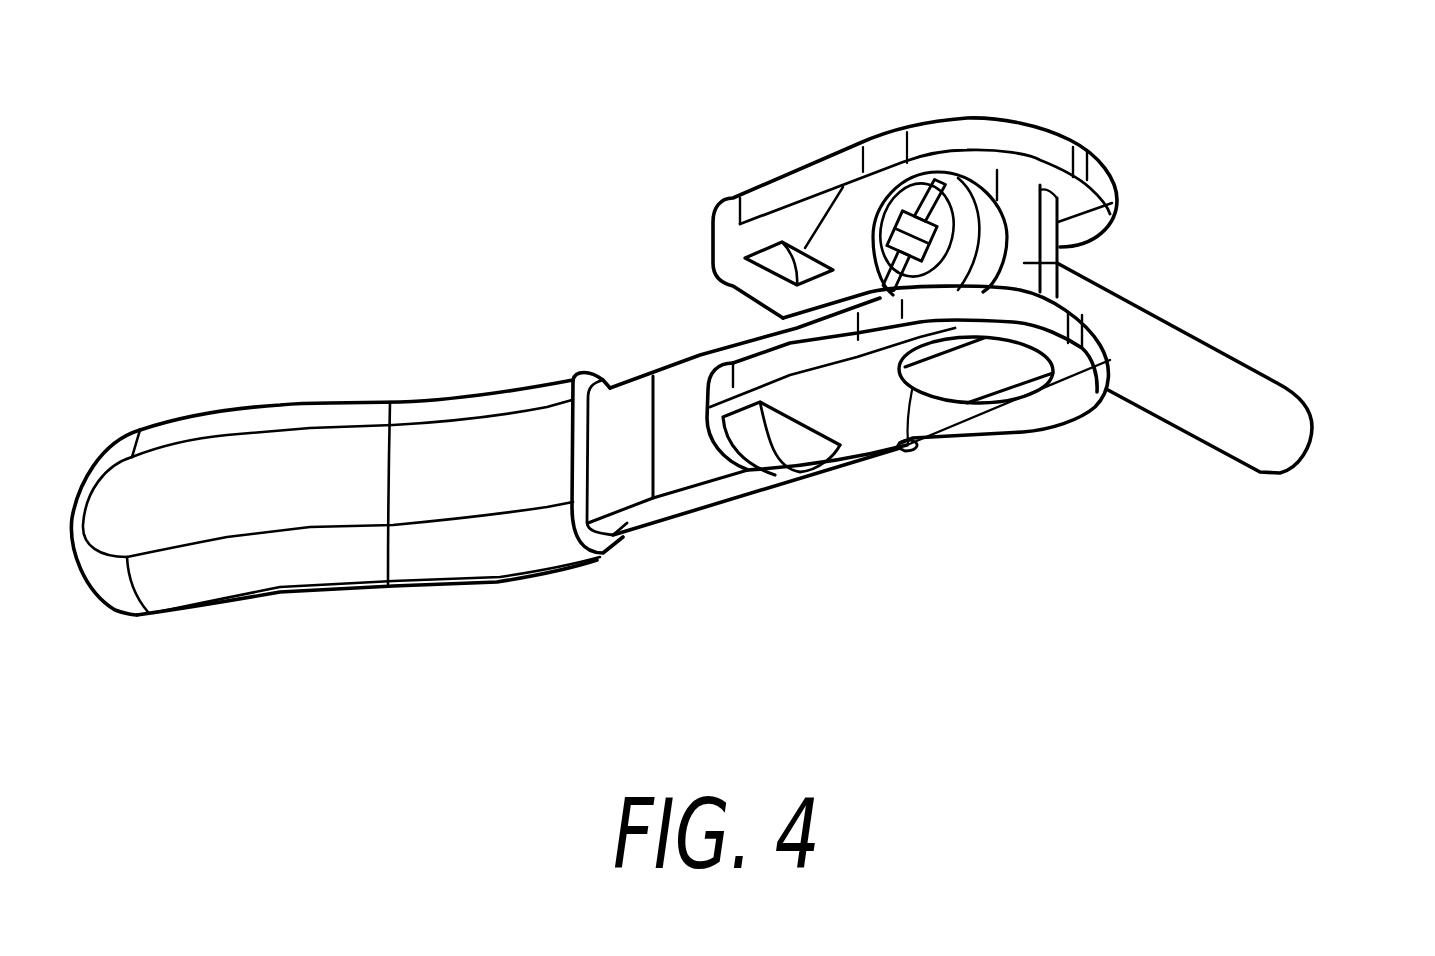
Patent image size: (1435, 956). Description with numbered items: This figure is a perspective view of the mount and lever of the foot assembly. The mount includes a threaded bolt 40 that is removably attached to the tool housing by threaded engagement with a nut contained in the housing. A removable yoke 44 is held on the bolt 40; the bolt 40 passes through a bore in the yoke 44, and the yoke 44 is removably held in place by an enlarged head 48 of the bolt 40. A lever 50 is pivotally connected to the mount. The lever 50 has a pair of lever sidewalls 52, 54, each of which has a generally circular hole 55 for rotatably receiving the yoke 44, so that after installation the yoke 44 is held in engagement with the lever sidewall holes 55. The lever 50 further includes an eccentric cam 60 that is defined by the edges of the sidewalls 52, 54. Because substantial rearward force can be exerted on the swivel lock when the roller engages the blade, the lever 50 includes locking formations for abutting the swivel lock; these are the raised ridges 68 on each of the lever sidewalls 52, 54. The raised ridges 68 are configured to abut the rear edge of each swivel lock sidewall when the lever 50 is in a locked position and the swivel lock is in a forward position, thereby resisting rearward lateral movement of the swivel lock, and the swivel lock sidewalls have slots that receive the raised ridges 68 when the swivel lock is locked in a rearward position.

The threaded bolt 40 is at (1243, 410).
The removable yoke 44 is at (1092, 410).
The enlarged head 48 is at (963, 228).
The lever 50 is at (307, 475).
The lever sidewall 52 is at (821, 178).
The lever sidewall 54 is at (827, 338).
The circular hole 55 is at (910, 446).
The eccentric cam 60 is at (1083, 227).
The raised ridge 68 is at (755, 438).